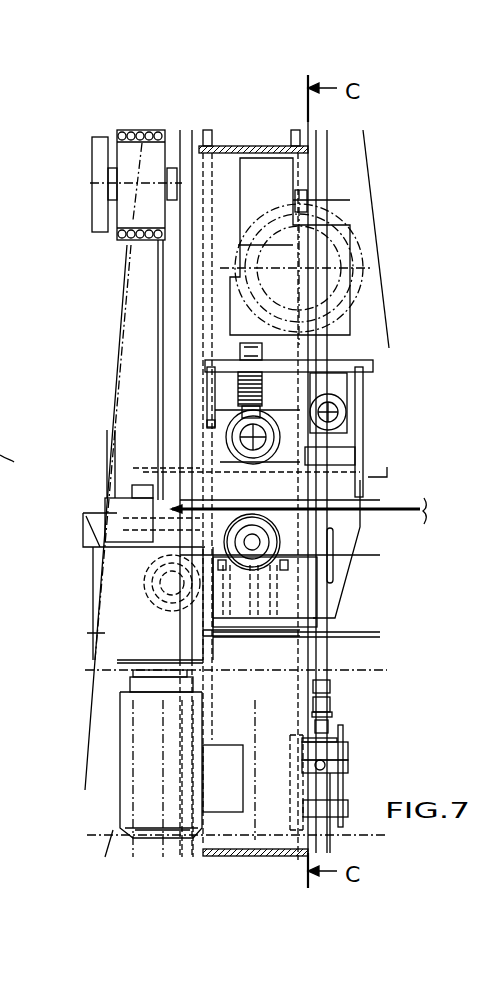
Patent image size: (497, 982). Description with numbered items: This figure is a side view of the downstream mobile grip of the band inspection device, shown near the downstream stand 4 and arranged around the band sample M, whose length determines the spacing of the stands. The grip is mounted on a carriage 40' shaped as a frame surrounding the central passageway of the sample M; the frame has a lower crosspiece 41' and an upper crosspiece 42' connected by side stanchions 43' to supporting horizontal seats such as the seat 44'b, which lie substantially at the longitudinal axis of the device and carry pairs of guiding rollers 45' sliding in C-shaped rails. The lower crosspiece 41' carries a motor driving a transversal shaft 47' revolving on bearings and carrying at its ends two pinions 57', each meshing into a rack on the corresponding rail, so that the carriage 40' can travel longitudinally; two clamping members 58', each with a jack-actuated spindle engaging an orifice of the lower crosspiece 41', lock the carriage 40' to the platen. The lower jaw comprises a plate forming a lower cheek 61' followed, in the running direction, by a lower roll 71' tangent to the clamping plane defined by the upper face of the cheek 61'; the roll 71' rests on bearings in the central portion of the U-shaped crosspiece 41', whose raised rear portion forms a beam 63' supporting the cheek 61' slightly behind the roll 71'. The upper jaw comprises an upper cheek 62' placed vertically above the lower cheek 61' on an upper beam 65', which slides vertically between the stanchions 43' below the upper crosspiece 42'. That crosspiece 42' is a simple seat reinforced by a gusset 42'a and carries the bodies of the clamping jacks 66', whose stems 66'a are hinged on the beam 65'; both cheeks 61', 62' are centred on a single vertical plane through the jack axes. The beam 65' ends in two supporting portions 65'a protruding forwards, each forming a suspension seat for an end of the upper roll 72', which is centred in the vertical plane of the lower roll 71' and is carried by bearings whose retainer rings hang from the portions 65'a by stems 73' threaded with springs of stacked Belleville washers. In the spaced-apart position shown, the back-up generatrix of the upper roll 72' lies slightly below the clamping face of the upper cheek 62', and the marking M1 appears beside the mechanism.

The downstream stand 4 is at (353, 170).
The clamping jacks 66' is at (325, 265).
The stems of the clamping jacks 66'a is at (336, 258).
The upper crosspiece 42' is at (320, 341).
The gusset 42'a is at (173, 330).
The carriage 40' is at (257, 441).
The upper beam 65' is at (330, 419).
The supporting portions 65'a is at (164, 371).
The upper roll 72' is at (370, 417).
The stem 73' is at (141, 397).
The side stanchions 43' is at (213, 439).
The supporting horizontal seat 44'b is at (28, 456).
The guiding rollers 45' is at (105, 507).
The upper cheek 62' is at (392, 432).
The lower cheek 61' is at (305, 535).
The lower roll 71' is at (378, 556).
The beam 63' is at (371, 549).
The lower crosspiece 41' is at (301, 601).
The pinions 57' is at (125, 583).
The transversal shaft 47' is at (218, 608).
The clamping members 58' is at (342, 766).
The band sample M is at (404, 497).
The motor axis M1 is at (293, 497).